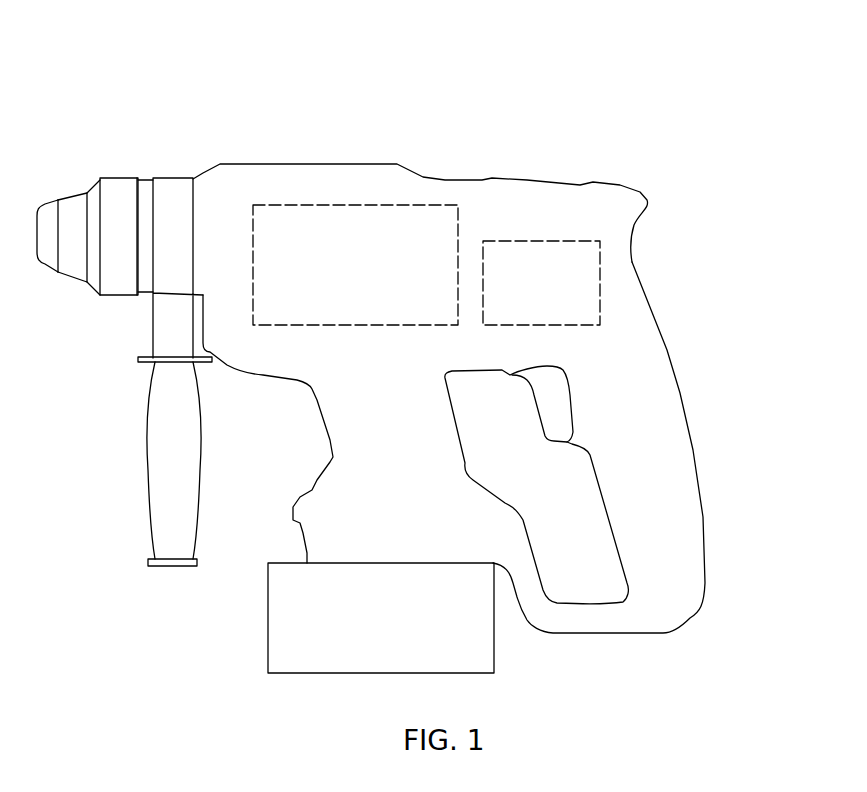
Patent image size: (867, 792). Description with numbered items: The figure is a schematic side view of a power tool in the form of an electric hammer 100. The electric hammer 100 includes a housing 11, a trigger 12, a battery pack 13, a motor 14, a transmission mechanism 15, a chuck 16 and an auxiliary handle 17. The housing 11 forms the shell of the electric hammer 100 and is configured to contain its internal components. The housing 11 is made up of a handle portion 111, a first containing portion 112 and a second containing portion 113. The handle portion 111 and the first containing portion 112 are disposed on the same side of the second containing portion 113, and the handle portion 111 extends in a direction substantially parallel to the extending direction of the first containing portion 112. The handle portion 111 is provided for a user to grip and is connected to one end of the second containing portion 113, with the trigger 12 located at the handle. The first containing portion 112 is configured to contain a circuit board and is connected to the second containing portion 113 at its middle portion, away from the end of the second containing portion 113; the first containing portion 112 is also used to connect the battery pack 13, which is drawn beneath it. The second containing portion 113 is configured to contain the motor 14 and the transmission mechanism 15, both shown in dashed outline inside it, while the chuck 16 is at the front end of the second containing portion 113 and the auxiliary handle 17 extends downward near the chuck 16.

The electric hammer 100 is at (377, 103).
The housing 11 is at (249, 173).
The handle portion 111 is at (666, 444).
The first containing portion 112 is at (346, 435).
The second containing portion 113 is at (529, 186).
The trigger 12 is at (556, 415).
The battery pack 13 is at (303, 613).
The motor 14 is at (590, 258).
The transmission mechanism 15 is at (359, 219).
The chuck 16 is at (115, 206).
The auxiliary handle 17 is at (172, 468).